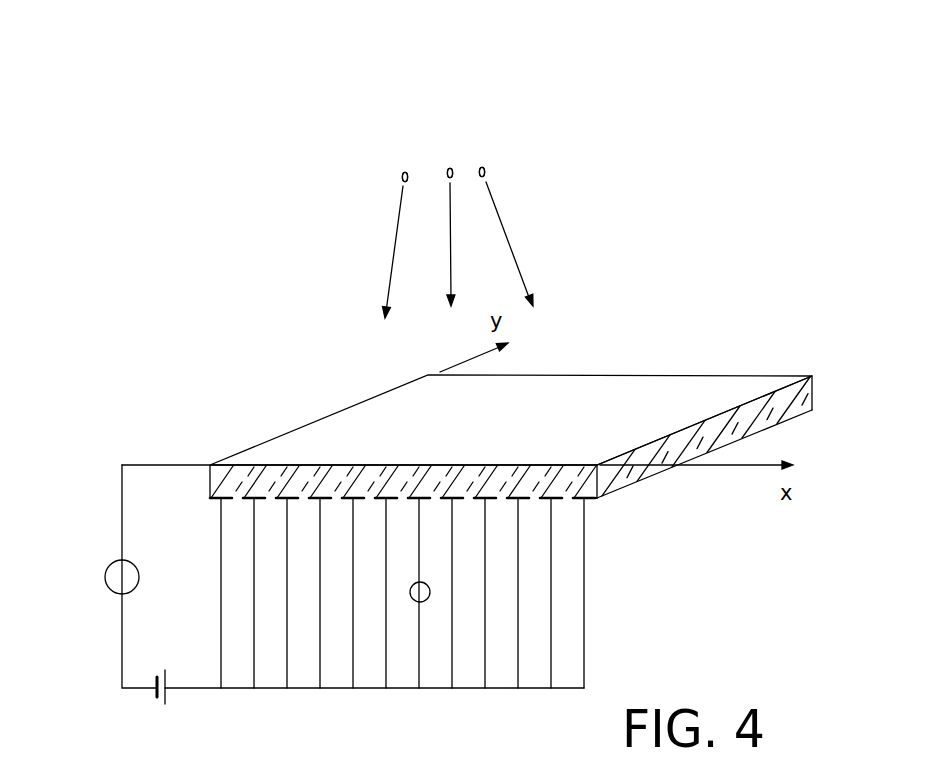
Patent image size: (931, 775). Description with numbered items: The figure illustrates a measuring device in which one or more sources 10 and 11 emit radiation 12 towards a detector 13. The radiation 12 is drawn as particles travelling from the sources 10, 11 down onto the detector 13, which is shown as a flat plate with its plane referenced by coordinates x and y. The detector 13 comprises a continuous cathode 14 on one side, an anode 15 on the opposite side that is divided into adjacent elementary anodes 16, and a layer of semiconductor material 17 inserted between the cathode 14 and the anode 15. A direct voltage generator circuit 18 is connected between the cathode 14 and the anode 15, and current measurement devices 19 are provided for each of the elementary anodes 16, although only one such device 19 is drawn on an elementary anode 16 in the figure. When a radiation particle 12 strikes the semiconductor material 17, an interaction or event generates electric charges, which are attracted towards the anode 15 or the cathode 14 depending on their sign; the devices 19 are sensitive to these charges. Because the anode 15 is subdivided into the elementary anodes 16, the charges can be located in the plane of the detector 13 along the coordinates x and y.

The source 10 is at (482, 166).
The source 11 is at (443, 174).
The radiation 12 is at (515, 257).
The detector 13 is at (660, 397).
The continuous cathode 14 is at (520, 465).
The anode 15 is at (606, 506).
The elementary anodes 16 is at (425, 494).
The layer of semiconductor material 17 is at (606, 490).
The direct voltage generator circuit 18 is at (168, 697).
The current measurement devices 19 is at (110, 553).